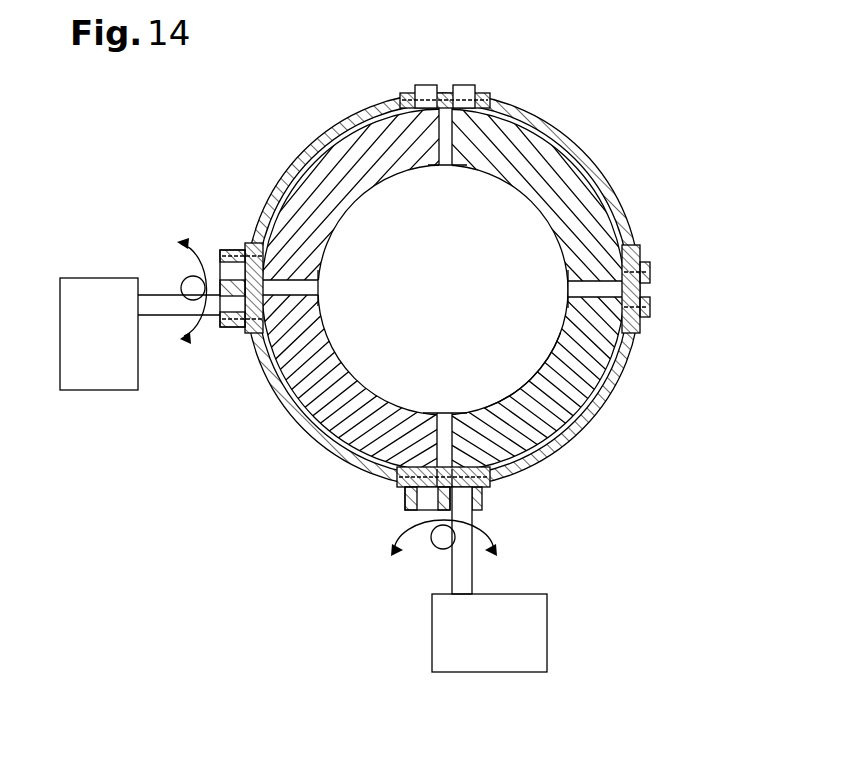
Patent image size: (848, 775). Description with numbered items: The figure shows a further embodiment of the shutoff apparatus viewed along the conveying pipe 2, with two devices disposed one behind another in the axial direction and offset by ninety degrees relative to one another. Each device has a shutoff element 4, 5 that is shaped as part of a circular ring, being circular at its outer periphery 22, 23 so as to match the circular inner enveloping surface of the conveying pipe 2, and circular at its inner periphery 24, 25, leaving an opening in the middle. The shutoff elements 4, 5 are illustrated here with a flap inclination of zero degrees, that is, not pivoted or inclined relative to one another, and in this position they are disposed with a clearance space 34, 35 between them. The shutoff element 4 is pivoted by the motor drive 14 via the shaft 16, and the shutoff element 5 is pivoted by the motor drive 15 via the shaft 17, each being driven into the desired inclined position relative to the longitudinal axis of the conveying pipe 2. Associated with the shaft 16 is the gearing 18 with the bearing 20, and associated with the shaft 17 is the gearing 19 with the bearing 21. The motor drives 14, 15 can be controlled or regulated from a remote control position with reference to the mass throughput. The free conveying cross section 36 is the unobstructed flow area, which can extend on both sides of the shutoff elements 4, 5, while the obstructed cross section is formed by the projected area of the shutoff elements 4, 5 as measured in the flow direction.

The conveying pipe 2 is at (285, 400).
The shutoff element 4 is at (350, 433).
The shutoff element 5 is at (567, 185).
The motor drive 14 is at (98, 287).
The motor drive 15 is at (443, 633).
The shaft 16 is at (156, 318).
The shaft 17 is at (465, 577).
The gearing 18 is at (228, 249).
The gearing 19 is at (405, 505).
The bearing 20 is at (240, 340).
The bearing 21 is at (483, 482).
The outer periphery 22 is at (572, 157).
The outer periphery 23 is at (618, 352).
The inner periphery 24 is at (327, 330).
The inner periphery 25 is at (568, 268).
The clearance space 34 is at (534, 96).
The clearance space 35 is at (445, 96).
The free conveying cross section 36 is at (502, 370).